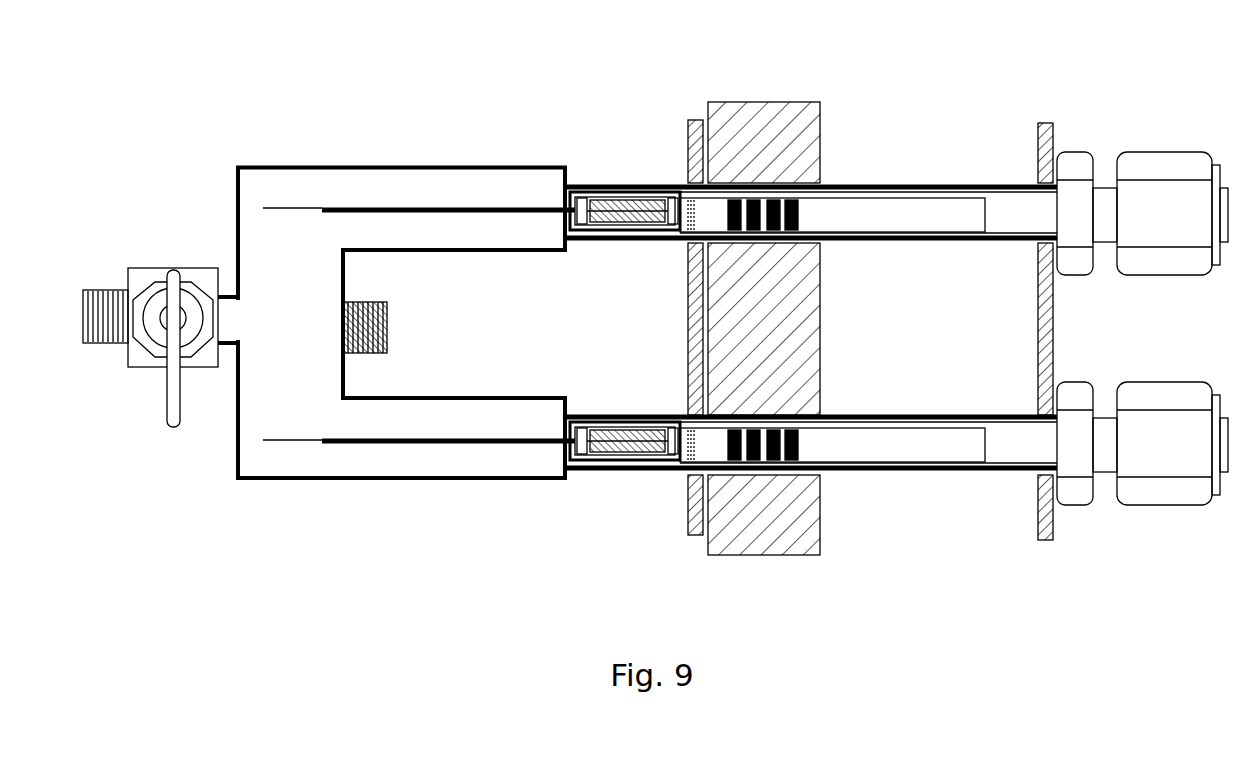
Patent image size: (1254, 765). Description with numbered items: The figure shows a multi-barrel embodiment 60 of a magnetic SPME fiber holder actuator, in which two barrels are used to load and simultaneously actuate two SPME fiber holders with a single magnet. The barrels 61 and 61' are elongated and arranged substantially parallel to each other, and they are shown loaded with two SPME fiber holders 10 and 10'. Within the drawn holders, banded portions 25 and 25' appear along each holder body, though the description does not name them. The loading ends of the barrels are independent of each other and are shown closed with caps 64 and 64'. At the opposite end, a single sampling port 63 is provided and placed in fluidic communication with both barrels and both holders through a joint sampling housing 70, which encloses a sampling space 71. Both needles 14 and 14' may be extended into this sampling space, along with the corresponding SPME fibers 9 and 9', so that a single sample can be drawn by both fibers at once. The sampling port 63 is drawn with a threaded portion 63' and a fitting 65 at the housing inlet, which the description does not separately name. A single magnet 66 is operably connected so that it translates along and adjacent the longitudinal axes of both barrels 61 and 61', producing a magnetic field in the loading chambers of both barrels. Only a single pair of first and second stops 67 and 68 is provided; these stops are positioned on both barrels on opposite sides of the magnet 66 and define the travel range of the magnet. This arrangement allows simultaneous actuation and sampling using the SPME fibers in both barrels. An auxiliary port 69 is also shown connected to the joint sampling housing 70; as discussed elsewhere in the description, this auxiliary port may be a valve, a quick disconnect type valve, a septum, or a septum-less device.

The multi-barrel embodiment 60 is at (371, 70).
The joint sampling housing 70 is at (237, 455).
The sampling space 71 is at (277, 334).
The auxiliary port 69 is at (390, 327).
The SPME fiber 9 is at (292, 221).
The SPME fiber 9' is at (292, 453).
The needle 14 is at (448, 225).
The needle 14' is at (448, 456).
The first stop 67 is at (687, 160).
The magnet 66 is at (781, 101).
The second stop 68 is at (1053, 140).
The barrel 61 is at (812, 179).
The barrel 61' is at (812, 408).
The SPME fiber holder 10 is at (832, 246).
The SPME fiber holder 10' is at (832, 476).
The sensor elements 25 is at (795, 245).
The sensor elements 25' is at (796, 477).
The cap 64 is at (1142, 195).
The cap 64' is at (1142, 425).
The sampling port 63 is at (84, 342).
The threads 63' is at (87, 292).
The valve 65 is at (182, 268).